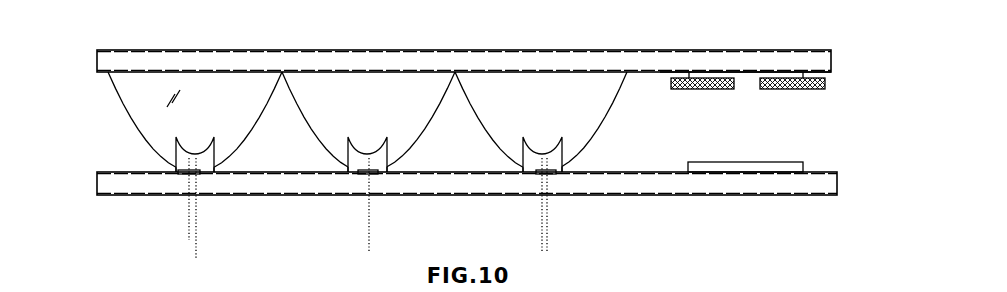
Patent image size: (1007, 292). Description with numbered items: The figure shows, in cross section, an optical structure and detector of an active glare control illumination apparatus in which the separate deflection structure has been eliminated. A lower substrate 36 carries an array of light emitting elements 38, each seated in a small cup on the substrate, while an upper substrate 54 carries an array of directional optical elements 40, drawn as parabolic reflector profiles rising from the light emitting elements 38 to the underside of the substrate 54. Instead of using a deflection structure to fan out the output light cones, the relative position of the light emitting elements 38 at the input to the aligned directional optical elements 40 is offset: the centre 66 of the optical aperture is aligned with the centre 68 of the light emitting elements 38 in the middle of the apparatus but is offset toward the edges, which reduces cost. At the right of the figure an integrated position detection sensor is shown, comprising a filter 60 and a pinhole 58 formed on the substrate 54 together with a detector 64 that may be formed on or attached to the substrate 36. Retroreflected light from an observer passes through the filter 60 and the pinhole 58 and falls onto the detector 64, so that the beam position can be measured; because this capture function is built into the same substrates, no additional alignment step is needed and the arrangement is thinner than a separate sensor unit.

The substrate 54 is at (97, 60).
The substrate 36 is at (97, 182).
The directional optical elements 40 is at (145, 118).
The light emitting elements 38 is at (184, 175).
The filter 60 is at (745, 71).
The pinhole 58 is at (671, 81).
The detector 64 is at (688, 171).
The centre of the optical aperture 66 is at (541, 208).
The centre of the light emitting elements 68 is at (548, 233).